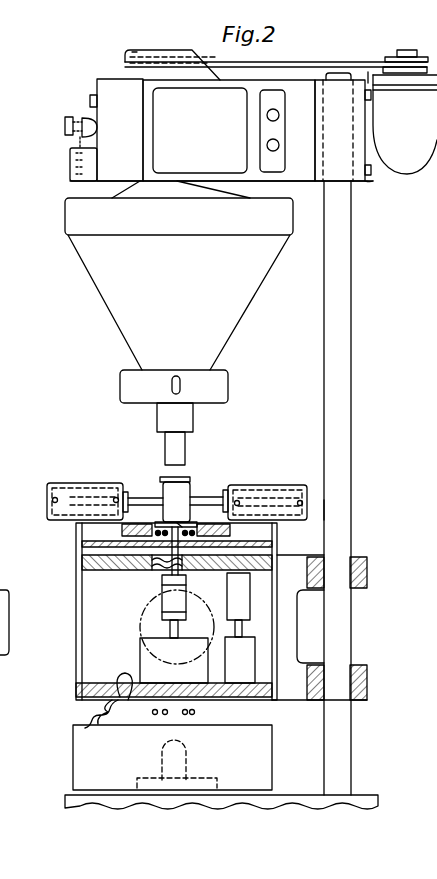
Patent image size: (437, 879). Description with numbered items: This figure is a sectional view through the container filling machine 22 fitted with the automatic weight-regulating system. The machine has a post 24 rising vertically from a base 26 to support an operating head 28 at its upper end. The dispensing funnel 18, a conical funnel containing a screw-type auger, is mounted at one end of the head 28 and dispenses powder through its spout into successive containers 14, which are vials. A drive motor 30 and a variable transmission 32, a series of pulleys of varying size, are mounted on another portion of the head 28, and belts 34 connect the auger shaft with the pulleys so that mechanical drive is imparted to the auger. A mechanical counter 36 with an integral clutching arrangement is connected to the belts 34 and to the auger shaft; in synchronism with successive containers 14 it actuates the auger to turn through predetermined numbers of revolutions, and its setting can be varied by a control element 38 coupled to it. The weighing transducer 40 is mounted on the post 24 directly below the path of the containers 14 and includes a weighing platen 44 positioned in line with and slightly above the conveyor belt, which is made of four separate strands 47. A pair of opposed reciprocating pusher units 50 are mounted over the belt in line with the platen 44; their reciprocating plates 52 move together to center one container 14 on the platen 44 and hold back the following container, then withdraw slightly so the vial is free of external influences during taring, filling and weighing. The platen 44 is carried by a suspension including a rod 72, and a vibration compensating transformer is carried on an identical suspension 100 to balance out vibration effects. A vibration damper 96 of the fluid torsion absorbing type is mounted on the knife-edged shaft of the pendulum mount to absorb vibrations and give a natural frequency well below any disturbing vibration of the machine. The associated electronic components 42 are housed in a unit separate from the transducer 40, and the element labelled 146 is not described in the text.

The container 14 is at (185, 490).
The dispensing funnel 18 is at (247, 302).
The container filling machine 22 is at (340, 362).
The post 24 is at (342, 511).
The base 26 is at (355, 797).
The operating head 28 is at (102, 78).
The drive motor 30 is at (370, 185).
The variable transmission 32 is at (428, 48).
The belts 34 is at (338, 68).
The mechanical counter 36 is at (118, 100).
The control element 38 is at (65, 125).
The weighing transducer 40 is at (279, 572).
The electronic components 42 is at (268, 760).
The weighing platen 44 is at (178, 525).
The strands 47 is at (185, 538).
The pusher unit 50 is at (80, 482).
The reciprocating plate 52 is at (142, 497).
The rod 72 is at (162, 592).
The vibration damper 96 is at (137, 632).
The suspension 100 is at (227, 596).
The switch 146 is at (70, 168).